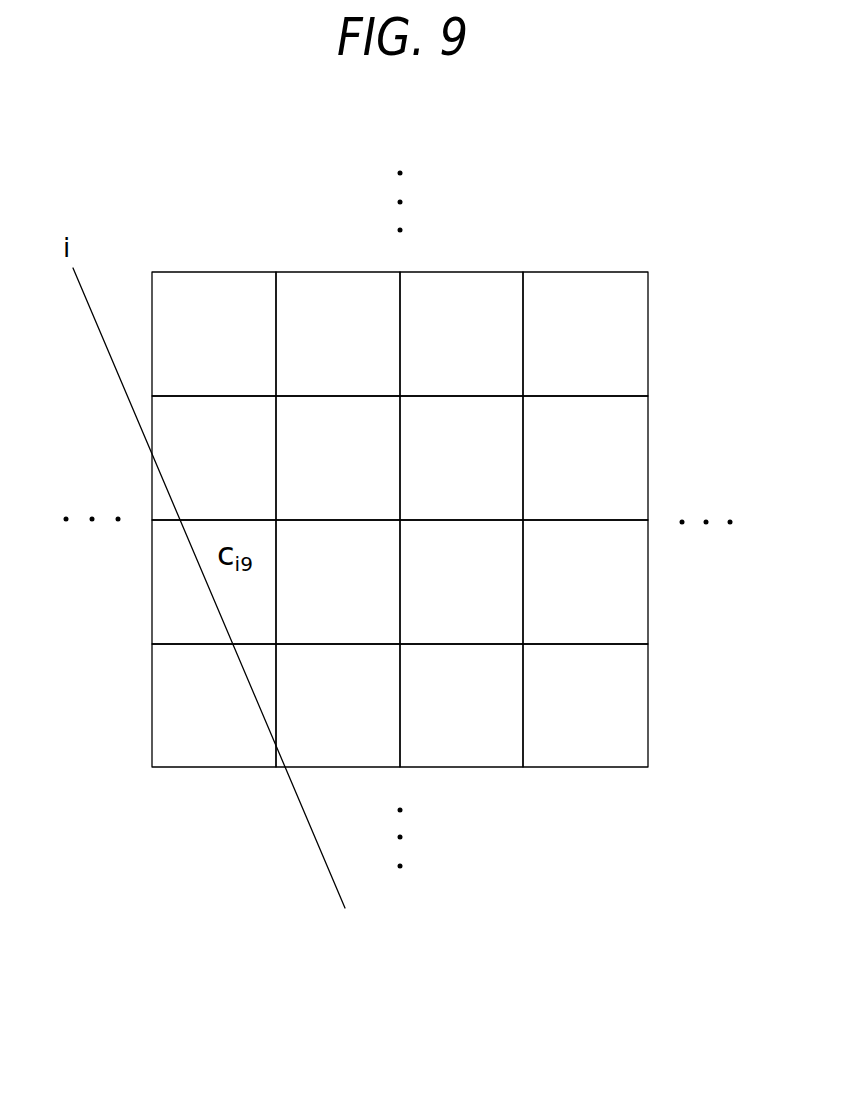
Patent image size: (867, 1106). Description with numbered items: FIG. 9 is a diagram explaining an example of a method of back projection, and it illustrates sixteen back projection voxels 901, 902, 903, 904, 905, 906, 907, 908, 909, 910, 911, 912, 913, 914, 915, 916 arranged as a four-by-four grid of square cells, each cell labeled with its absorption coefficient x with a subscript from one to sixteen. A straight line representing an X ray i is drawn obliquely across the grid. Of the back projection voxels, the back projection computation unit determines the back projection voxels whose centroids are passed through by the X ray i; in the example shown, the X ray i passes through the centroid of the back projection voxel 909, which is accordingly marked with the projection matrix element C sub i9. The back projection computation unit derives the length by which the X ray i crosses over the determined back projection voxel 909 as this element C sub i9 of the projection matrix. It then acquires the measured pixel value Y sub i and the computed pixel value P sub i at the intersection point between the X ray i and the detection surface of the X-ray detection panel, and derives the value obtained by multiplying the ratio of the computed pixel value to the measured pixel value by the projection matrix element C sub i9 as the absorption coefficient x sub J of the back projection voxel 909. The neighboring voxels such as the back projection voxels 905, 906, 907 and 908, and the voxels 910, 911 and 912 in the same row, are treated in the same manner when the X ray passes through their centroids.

The back projection voxel 901 is at (214, 303).
The back projection voxel 902 is at (338, 303).
The back projection voxel 903 is at (462, 305).
The back projection voxel 904 is at (586, 305).
The back projection voxel 905 is at (213, 427).
The back projection voxel 906 is at (350, 430).
The back projection voxel 907 is at (490, 438).
The back projection voxel 908 is at (615, 480).
The back projection voxel 909 is at (183, 582).
The back projection voxel 910 is at (352, 617).
The back projection voxel 911 is at (492, 600).
The back projection voxel 912 is at (615, 560).
The back projection voxel 913 is at (213, 735).
The back projection voxel 914 is at (337, 735).
The back projection voxel 915 is at (457, 735).
The back projection voxel 916 is at (587, 735).